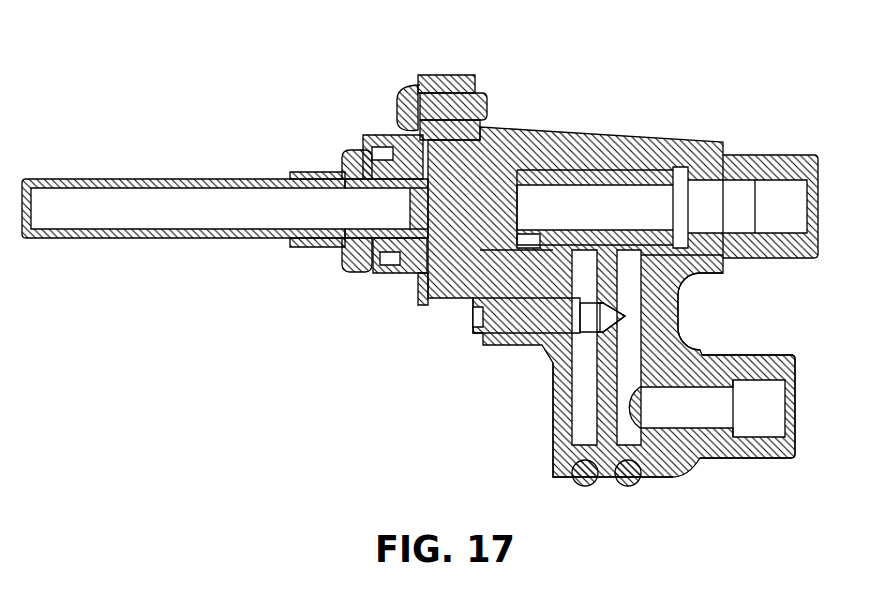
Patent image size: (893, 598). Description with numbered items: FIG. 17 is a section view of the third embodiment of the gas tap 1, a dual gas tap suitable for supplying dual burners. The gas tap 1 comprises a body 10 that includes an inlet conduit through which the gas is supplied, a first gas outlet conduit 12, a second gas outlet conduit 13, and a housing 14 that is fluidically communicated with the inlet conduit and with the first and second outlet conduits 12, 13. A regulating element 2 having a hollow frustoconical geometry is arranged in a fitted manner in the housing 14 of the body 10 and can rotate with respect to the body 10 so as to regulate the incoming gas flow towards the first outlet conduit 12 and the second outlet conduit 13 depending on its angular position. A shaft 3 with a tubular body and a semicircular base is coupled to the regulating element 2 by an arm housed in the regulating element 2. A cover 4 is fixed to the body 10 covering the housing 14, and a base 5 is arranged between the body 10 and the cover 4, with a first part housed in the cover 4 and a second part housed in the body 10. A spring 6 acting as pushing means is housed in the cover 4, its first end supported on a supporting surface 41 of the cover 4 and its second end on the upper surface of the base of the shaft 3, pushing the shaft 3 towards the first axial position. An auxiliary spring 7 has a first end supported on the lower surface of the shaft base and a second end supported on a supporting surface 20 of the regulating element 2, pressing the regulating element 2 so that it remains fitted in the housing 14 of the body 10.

The gas tap 1 is at (695, 65).
The regulating element 2 is at (565, 132).
The shaft 3 is at (148, 200).
The cover 4 is at (300, 245).
The base 5 is at (392, 138).
The spring 6 is at (342, 155).
The auxiliary spring 7 is at (478, 100).
The body 10 is at (547, 352).
The first gas outlet conduit 12 is at (788, 215).
The second gas outlet conduit 13 is at (768, 410).
The housing 14 is at (690, 290).
The supporting surface 20 is at (512, 130).
The supporting surface 41 is at (352, 272).